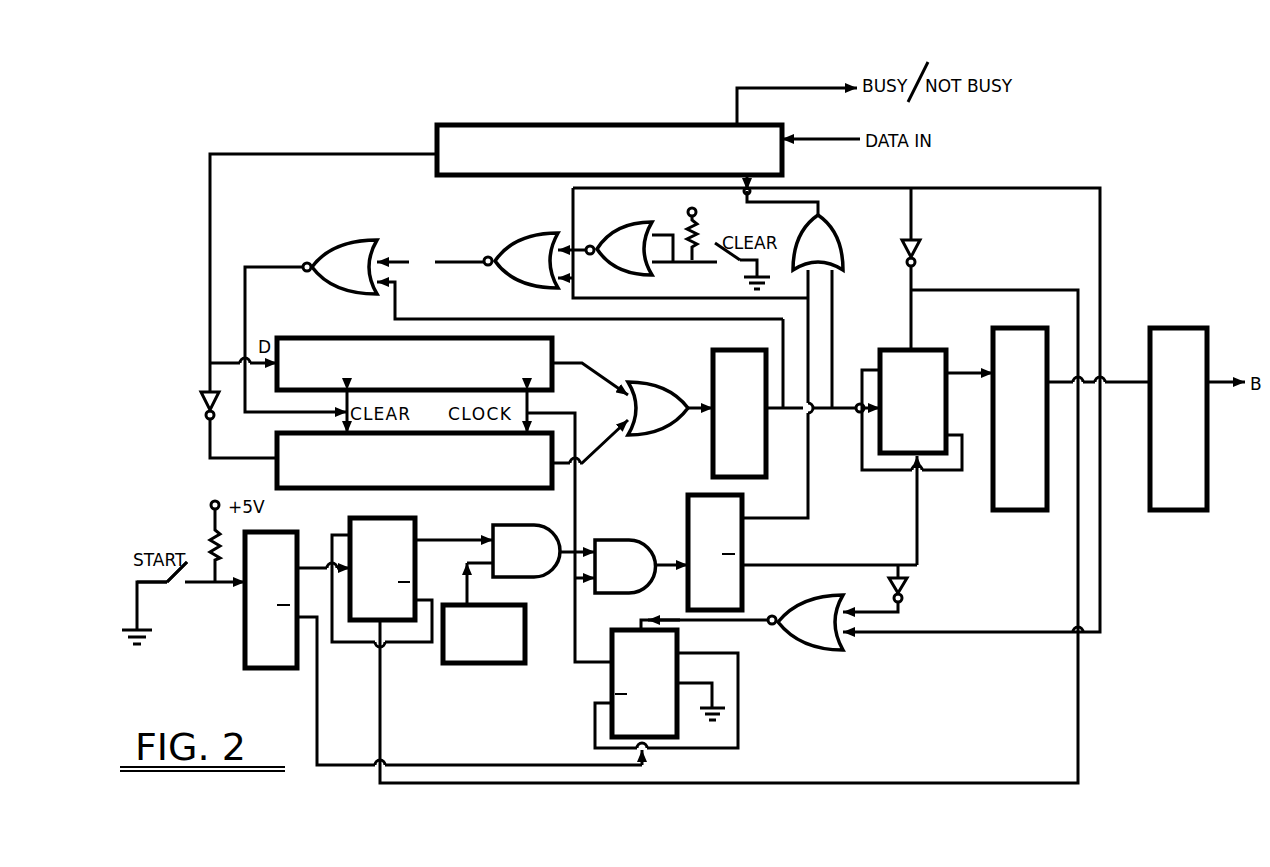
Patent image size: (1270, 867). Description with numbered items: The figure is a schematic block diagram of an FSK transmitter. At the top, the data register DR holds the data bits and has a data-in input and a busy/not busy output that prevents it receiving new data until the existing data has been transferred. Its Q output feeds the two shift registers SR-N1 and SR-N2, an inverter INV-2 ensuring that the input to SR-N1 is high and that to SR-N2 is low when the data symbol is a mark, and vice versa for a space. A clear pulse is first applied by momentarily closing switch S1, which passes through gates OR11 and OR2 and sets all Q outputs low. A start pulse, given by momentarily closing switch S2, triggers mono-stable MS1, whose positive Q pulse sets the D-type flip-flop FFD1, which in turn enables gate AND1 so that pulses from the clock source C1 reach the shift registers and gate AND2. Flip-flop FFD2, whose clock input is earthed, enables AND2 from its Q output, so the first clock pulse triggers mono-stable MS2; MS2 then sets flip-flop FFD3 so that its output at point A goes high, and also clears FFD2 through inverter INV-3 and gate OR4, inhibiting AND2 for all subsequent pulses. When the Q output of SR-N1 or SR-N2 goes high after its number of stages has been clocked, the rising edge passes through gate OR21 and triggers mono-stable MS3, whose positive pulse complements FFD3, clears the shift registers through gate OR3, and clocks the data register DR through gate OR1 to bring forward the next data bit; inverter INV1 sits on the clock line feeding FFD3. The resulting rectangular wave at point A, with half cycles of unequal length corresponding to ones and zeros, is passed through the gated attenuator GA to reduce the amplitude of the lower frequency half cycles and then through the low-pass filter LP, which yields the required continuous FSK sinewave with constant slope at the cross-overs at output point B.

The data register DR is at (598, 150).
The shift register N1 SR-N1 is at (414, 364).
The shift register N2 SR-N2 is at (414, 460).
The OR gate 1 OR1 is at (818, 242).
The OR gate 2 OR2 is at (521, 260).
The OR gate 3 OR3 is at (340, 267).
The OR gate 4 OR4 is at (805, 622).
The OR gate 11 OR11 is at (619, 248).
The OR gate 21 OR21 is at (658, 408).
The AND gate 1 AND1 is at (526, 551).
The AND gate 2 AND2 is at (625, 566).
The inverter 1 INV1 is at (927, 261).
The inverter 2 INV-2 is at (183, 407).
The inverter 3 INV-3 is at (920, 591).
The mono-stable 1 MS1 is at (250, 651).
The mono-stable 2 MS2 is at (687, 517).
The mono-stable 3 MS3 is at (712, 373).
The D-type flip-flop 1 FFD1 is at (350, 521).
The D-type flip-flop 2 FFD2 is at (610, 681).
The D-type flip-flop 3 FFD3 is at (875, 349).
The gated attenuator GA is at (991, 452).
The low-pass filter LP is at (1168, 452).
The clock source C1 is at (484, 634).
The clear switch S1 is at (713, 248).
The start switch S2 is at (162, 597).